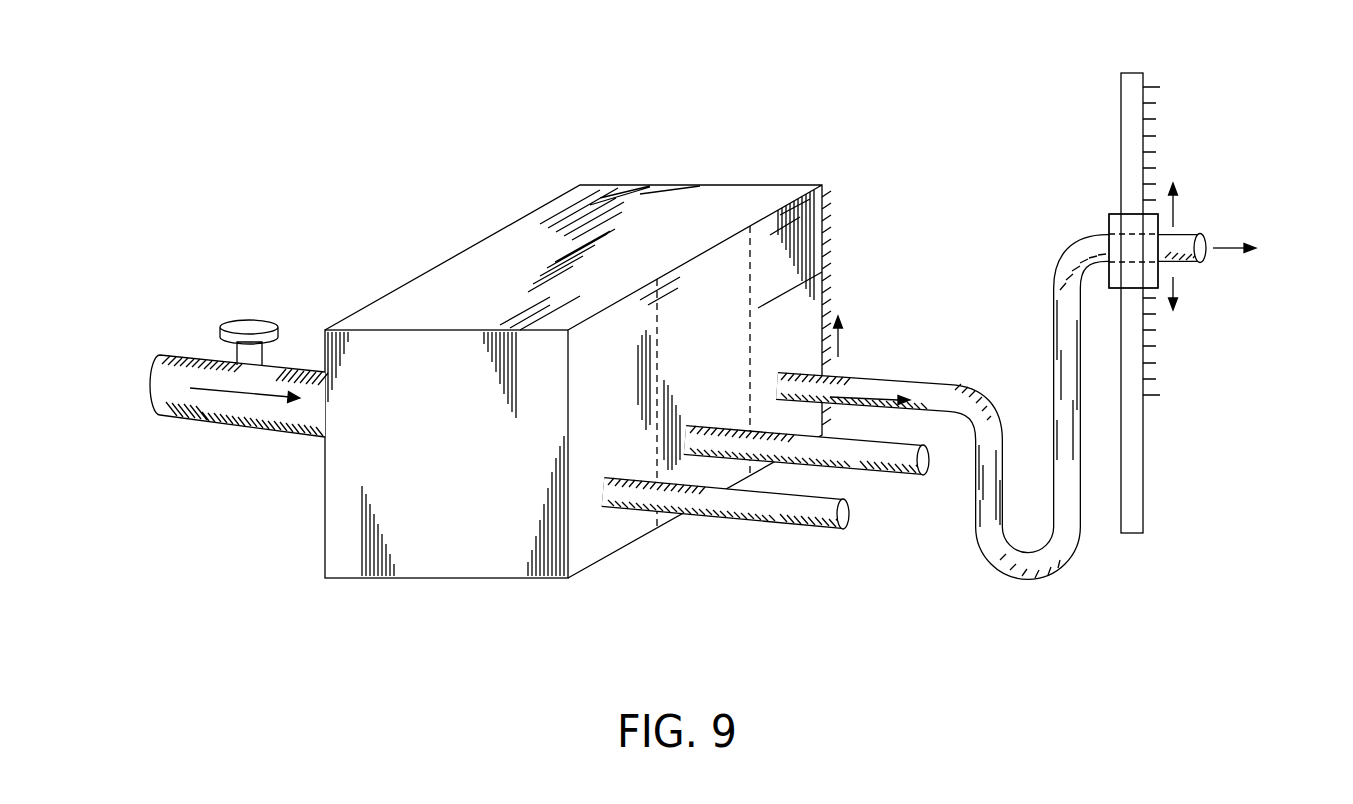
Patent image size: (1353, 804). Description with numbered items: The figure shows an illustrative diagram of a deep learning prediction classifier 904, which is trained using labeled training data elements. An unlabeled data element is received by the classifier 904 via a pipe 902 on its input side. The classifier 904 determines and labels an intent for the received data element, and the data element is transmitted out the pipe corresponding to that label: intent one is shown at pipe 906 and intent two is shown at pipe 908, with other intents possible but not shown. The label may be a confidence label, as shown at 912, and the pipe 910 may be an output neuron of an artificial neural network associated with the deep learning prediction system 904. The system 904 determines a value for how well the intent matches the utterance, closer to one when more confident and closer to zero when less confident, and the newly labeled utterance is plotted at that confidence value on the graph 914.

The pipe 902 is at (200, 356).
The deep learning prediction classifier 904 is at (388, 330).
The intent 1 pipe 906 is at (849, 514).
The intent 2 pipe 908 is at (929, 463).
The pipe 910 is at (1035, 548).
The confidence label 912 is at (974, 332).
The graph 914 is at (1121, 155).